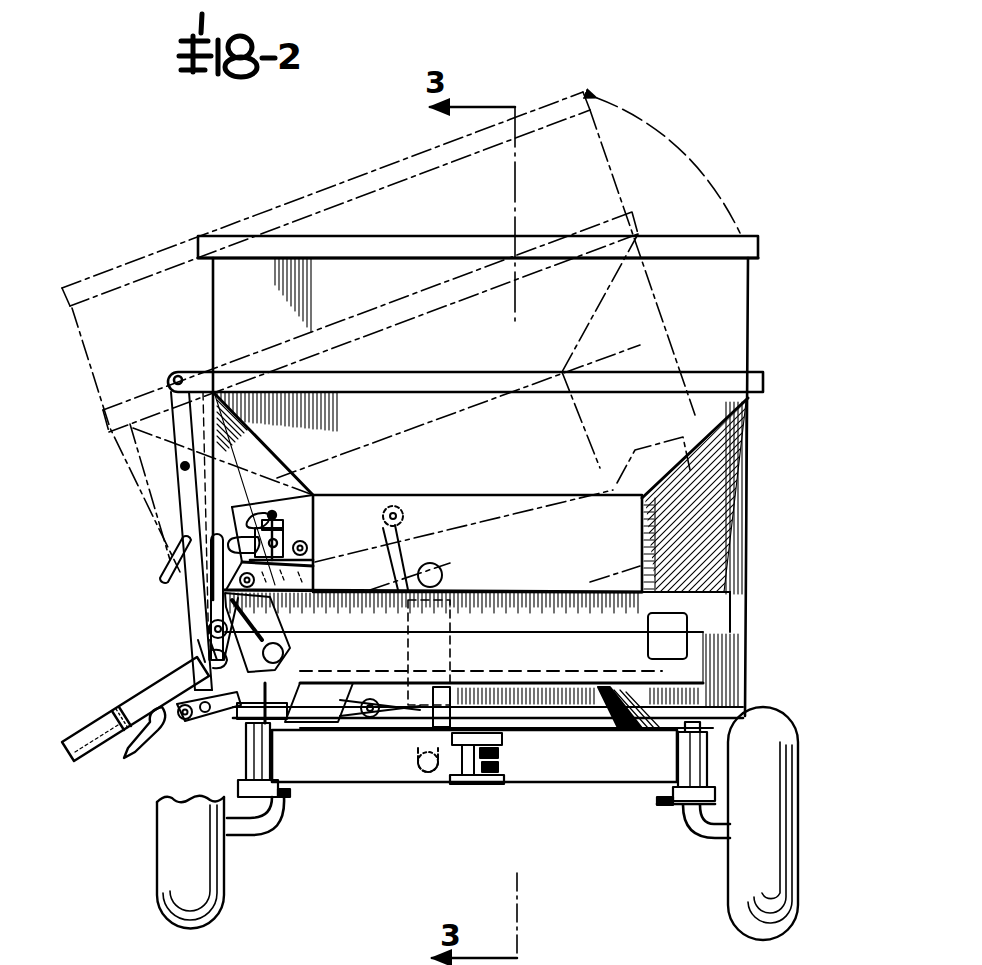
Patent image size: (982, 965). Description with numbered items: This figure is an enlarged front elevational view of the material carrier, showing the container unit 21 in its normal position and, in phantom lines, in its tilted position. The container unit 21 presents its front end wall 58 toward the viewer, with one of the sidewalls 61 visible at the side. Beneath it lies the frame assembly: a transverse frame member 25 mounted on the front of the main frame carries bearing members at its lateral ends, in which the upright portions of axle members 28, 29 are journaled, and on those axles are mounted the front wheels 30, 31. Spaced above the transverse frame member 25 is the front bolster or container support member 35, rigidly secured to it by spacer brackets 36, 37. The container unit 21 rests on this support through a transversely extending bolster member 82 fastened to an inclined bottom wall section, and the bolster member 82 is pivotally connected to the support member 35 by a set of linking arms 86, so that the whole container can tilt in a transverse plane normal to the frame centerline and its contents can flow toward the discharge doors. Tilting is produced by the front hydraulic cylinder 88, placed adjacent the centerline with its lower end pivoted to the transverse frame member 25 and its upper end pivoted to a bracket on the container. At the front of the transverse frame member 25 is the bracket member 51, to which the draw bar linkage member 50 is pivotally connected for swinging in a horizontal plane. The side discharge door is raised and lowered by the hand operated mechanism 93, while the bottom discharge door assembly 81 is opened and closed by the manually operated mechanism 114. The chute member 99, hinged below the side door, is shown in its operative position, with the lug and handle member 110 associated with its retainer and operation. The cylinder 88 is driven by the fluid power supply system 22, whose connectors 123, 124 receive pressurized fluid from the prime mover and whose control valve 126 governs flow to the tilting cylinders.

The container unit 21 is at (350, 178).
The sidewall 61 is at (752, 328).
The front end wall 58 is at (498, 475).
The bolster member 82 is at (548, 603).
The front hydraulic cylinder 88 is at (452, 660).
The front bolster or container support member 35 is at (527, 722).
The spacer bracket 37 is at (642, 728).
The spacer bracket 36 is at (316, 722).
The transverse frame member 25 is at (365, 780).
The linkage member 50 is at (500, 764).
The bracket member 51 is at (475, 786).
The axle member 28 is at (242, 836).
The axle member 29 is at (696, 820).
The front wheel 30 is at (158, 875).
The front wheel 31 is at (775, 860).
The hand operated mechanism 93 is at (175, 498).
The manually operated mechanism 114 is at (211, 613).
The connector 124 is at (240, 580).
The control valve 126 is at (252, 520).
The power supply system 22 is at (290, 538).
The connector 123 is at (308, 548).
The linking arms 86 is at (290, 648).
The chute member 99 is at (158, 680).
The lug / handle member 110 is at (150, 740).
The bottom discharge door assembly 81 is at (238, 716).